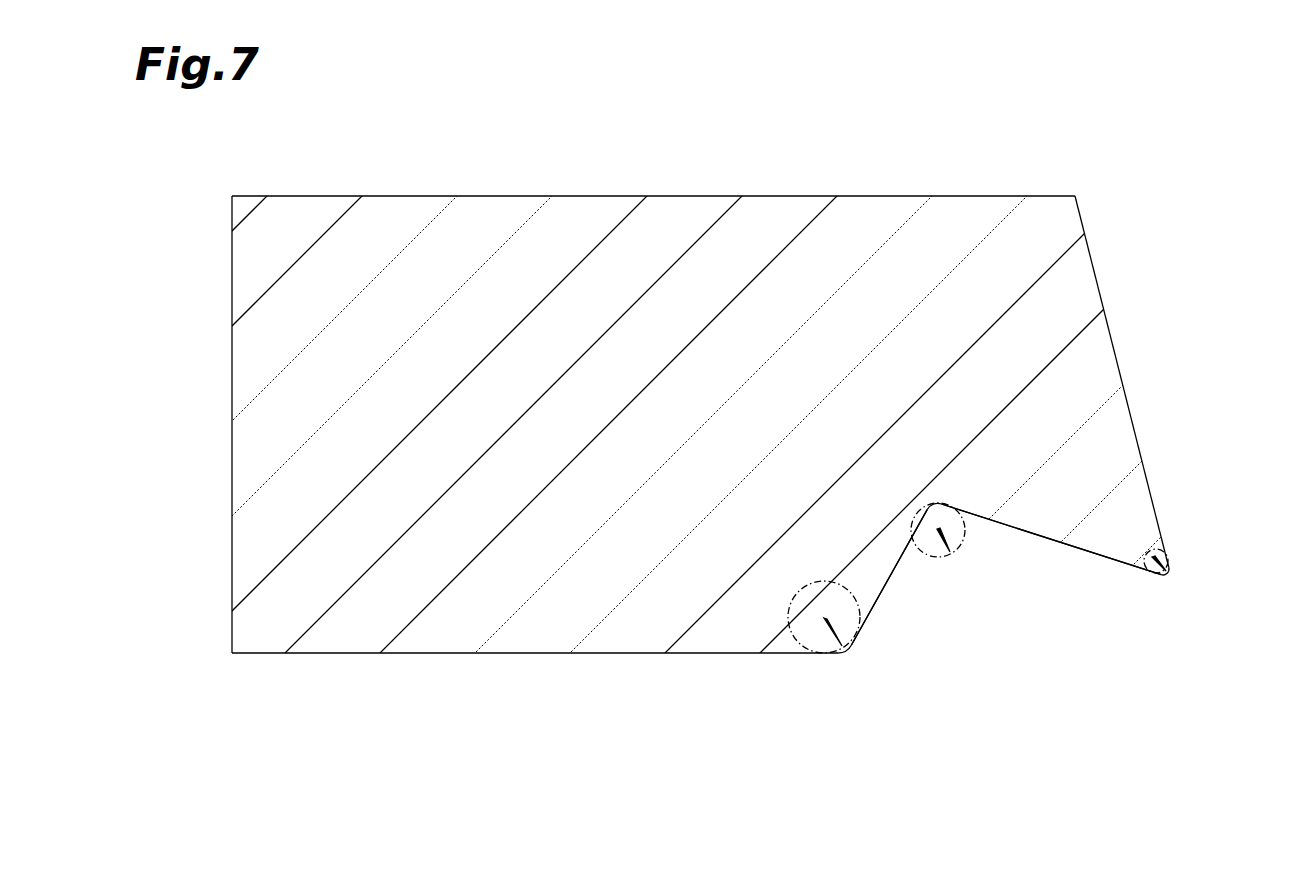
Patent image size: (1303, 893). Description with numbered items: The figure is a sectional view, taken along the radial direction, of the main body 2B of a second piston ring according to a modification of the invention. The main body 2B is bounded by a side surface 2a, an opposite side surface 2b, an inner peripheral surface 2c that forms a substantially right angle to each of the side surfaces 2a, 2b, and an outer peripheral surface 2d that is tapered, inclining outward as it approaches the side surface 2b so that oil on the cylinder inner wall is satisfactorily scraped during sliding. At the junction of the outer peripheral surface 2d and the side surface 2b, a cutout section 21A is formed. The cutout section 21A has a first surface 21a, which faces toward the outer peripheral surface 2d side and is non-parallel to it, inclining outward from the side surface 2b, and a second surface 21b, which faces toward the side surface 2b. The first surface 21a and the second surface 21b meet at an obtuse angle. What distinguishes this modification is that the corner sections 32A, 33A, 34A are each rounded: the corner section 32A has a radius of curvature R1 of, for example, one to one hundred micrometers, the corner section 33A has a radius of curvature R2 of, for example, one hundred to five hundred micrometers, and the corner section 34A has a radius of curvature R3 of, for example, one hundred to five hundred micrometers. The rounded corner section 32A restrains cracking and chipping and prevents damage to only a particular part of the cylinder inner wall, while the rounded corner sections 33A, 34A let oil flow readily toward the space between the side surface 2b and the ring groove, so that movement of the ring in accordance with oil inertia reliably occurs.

The main body 2B is at (458, 224).
The side surface 2a is at (683, 196).
The side surface 2b is at (550, 653).
The inner peripheral surface 2c is at (232, 408).
The outer peripheral surface 2d is at (1117, 362).
The cutout section 21A is at (1042, 609).
The first surface 21a is at (890, 576).
The second surface 21b is at (1048, 538).
The corner section 32A is at (1165, 572).
The corner section 33A is at (843, 647).
The corner section 34A is at (933, 506).
The radius of curvature R1 is at (840, 631).
The radius of curvature R2 is at (965, 540).
The radius of curvature R3 is at (1168, 561).